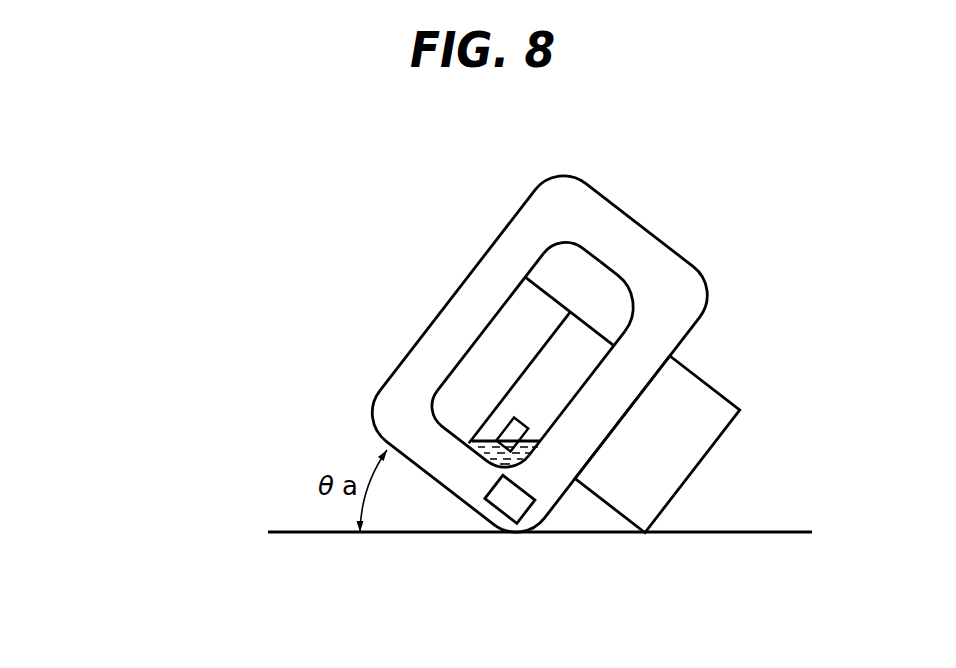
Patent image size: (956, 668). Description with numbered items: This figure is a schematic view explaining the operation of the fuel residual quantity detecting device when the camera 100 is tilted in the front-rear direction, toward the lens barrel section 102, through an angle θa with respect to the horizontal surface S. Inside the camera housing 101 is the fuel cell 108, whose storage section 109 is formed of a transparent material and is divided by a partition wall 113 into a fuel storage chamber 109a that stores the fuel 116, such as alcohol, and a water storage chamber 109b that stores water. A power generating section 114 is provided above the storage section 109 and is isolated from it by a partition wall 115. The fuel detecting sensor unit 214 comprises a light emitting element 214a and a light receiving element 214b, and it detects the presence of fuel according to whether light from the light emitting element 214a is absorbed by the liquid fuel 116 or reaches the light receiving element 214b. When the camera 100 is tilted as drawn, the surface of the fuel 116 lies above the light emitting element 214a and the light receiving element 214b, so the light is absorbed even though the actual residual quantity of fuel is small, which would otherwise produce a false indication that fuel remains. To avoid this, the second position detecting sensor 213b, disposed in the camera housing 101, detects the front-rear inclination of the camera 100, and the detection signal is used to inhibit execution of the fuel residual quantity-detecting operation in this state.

The camera 100 is at (455, 366).
The camera housing 101 is at (683, 281).
The lens barrel section 102 is at (717, 445).
The fuel cell 108 is at (586, 228).
The storage section 109 is at (532, 369).
The fuel storage chamber 109a is at (540, 388).
The water storage chamber 109b is at (523, 302).
The partition wall 113 is at (507, 397).
The power generating section 114 is at (553, 270).
The partition wall 115 is at (606, 334).
The fuel 116 is at (490, 460).
The second position detecting sensor 213b is at (503, 500).
The fuel detecting sensor unit 214 is at (304, 418).
The light emitting element 214a is at (512, 434).
The light receiving element 214b is at (500, 432).
The horizontal surface S is at (753, 531).